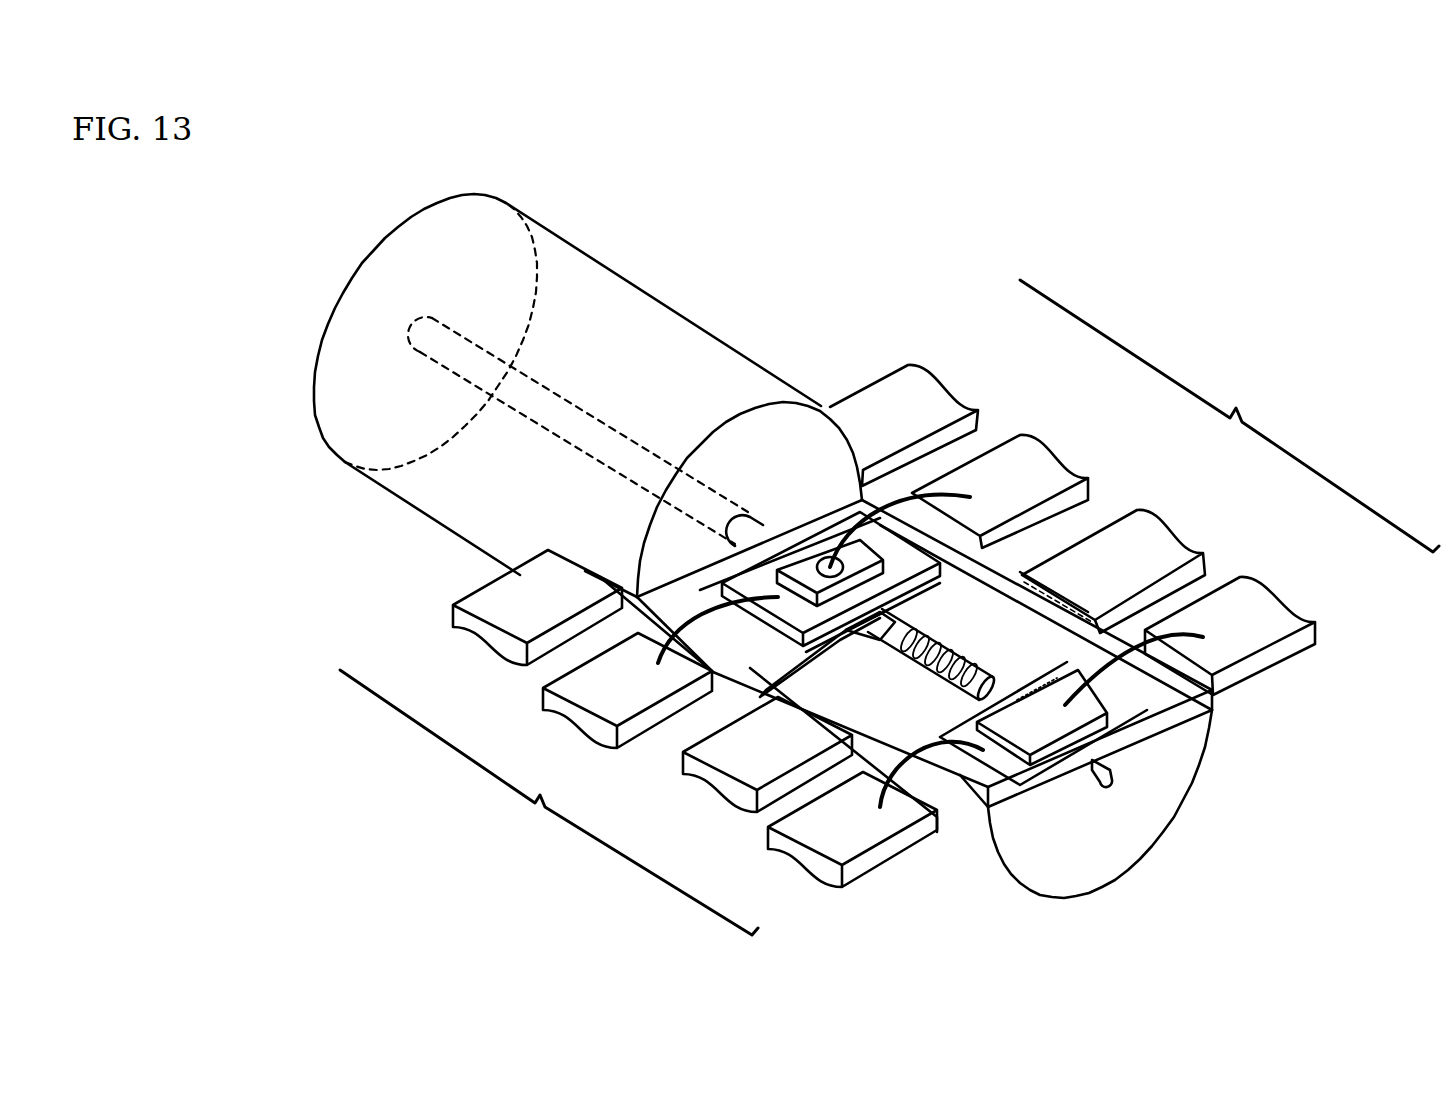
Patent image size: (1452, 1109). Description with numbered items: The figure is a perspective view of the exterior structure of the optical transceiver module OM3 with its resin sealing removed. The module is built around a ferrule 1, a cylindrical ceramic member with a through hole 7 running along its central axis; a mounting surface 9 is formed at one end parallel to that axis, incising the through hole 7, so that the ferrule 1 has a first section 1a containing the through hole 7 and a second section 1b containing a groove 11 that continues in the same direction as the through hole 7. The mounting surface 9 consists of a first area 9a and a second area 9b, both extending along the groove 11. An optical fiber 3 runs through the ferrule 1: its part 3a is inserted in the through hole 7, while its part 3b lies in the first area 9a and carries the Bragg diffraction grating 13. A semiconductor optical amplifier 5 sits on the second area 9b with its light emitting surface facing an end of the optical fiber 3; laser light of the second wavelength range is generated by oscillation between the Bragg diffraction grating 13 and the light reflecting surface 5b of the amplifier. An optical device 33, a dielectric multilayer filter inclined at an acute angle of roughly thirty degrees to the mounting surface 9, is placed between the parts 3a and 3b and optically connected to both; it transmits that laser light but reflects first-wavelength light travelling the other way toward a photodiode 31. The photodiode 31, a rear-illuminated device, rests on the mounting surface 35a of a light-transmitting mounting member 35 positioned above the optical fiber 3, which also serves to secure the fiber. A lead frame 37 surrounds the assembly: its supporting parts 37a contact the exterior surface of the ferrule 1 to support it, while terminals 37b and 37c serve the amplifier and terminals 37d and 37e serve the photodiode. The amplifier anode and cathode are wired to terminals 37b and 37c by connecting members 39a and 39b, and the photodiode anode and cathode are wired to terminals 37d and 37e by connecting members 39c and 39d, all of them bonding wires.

The ferrule 1 is at (318, 447).
The first section 1a is at (650, 340).
The second section 1b is at (977, 843).
The optical fiber 3 is at (900, 642).
The part of the optical fiber inserted in the through hole 3a is at (758, 538).
The part of the optical fiber in the first area 3b is at (985, 680).
The semiconductor optical amplifier 5 is at (1035, 745).
The light reflecting surface 5b is at (1085, 742).
The through hole 7 is at (633, 447).
The mounting surface 9 is at (936, 720).
The first area 9a is at (1032, 620).
The second area 9b is at (1178, 703).
The groove 11 is at (1105, 777).
The Bragg diffraction grating 13 is at (990, 670).
The photodiode 31 is at (807, 563).
The optical device 33 is at (822, 663).
The mounting member 35 is at (975, 548).
The mounting surface of the mounting member 35a is at (975, 550).
The lead frame 37 is at (889, 607).
The supporting parts 37a is at (947, 383).
The terminal 37b is at (1287, 603).
The terminal 37c is at (797, 863).
The terminal 37d is at (1060, 453).
The terminal 37e is at (577, 718).
The connecting member 39a is at (1177, 628).
The connecting member 39b is at (980, 752).
The connecting member 39c is at (878, 508).
The connecting member 39d is at (655, 640).
The optical transceiver module OM3 is at (1118, 296).